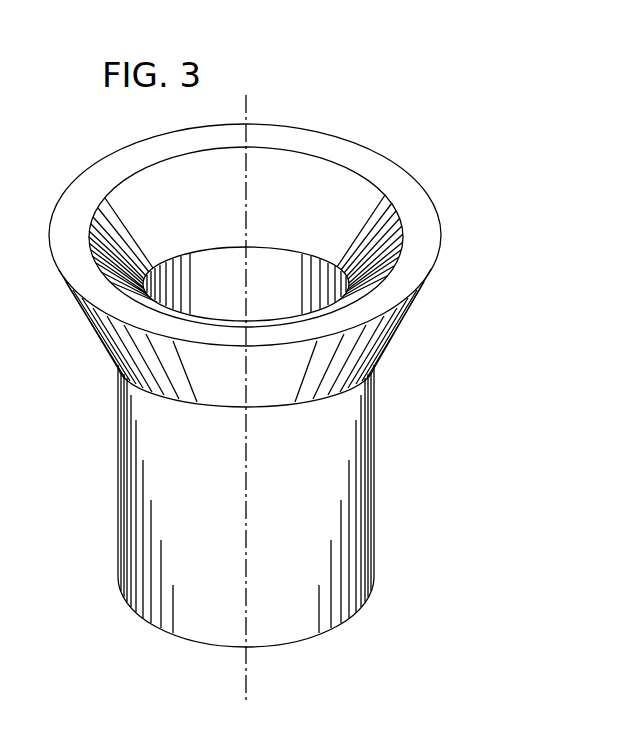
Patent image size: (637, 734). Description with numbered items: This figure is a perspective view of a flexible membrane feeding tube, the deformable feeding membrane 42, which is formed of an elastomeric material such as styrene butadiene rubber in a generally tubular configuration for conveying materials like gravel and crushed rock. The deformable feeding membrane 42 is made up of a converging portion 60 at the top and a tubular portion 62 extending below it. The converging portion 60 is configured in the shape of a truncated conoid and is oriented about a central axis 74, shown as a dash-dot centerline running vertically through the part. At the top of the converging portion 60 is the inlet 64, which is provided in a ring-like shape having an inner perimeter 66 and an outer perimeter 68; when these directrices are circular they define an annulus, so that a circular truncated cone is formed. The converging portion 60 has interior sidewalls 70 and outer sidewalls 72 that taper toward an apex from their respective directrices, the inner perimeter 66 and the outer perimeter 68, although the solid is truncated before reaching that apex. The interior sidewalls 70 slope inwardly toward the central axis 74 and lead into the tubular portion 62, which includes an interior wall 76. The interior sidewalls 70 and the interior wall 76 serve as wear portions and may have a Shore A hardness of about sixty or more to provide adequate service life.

The deformable feeding membrane 42 is at (463, 168).
The converging portion 60 is at (112, 370).
The tubular portion 62 is at (375, 480).
The inlet 64 is at (325, 146).
The inner perimeter 66 is at (405, 220).
The outer perimeter 68 is at (380, 153).
The interior sidewalls 70 is at (288, 172).
The outer sidewalls 72 is at (388, 352).
The central axis 74 is at (246, 683).
The interior wall 76 is at (307, 307).